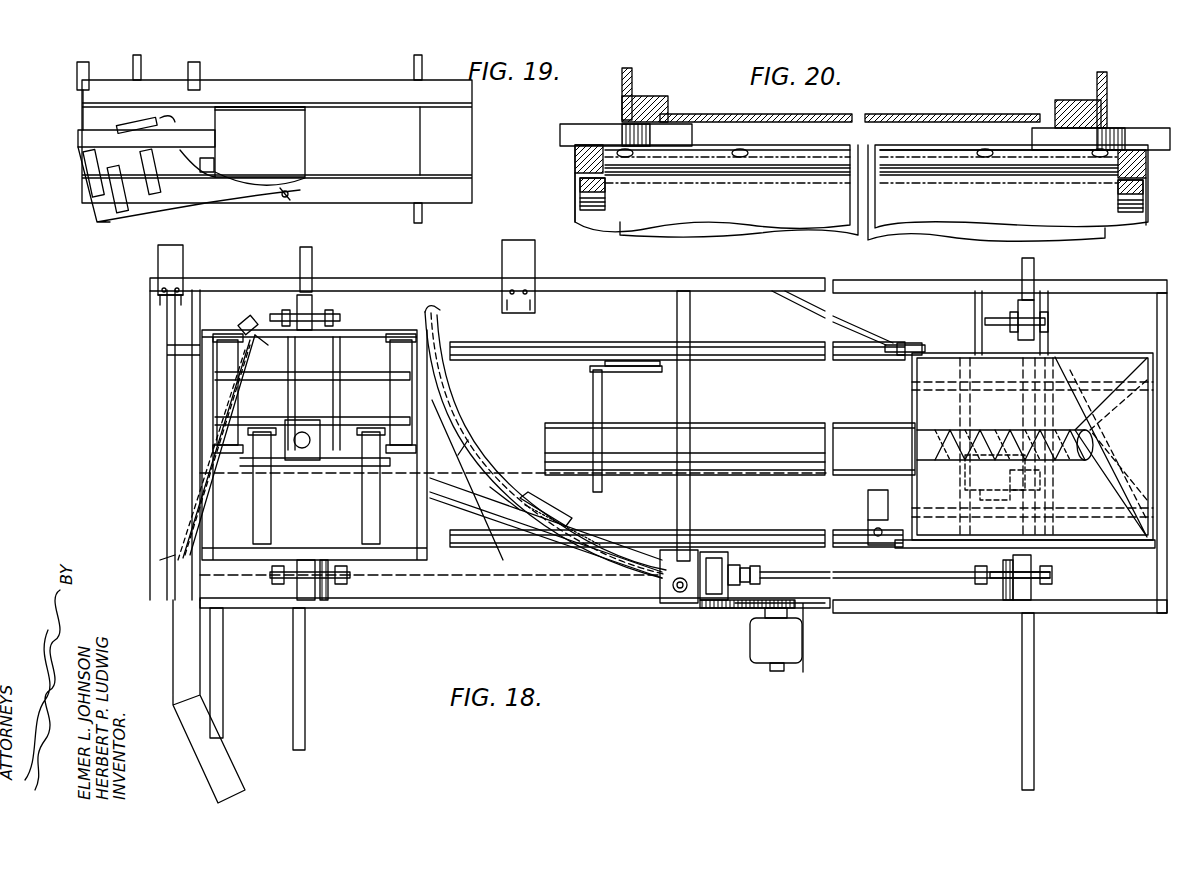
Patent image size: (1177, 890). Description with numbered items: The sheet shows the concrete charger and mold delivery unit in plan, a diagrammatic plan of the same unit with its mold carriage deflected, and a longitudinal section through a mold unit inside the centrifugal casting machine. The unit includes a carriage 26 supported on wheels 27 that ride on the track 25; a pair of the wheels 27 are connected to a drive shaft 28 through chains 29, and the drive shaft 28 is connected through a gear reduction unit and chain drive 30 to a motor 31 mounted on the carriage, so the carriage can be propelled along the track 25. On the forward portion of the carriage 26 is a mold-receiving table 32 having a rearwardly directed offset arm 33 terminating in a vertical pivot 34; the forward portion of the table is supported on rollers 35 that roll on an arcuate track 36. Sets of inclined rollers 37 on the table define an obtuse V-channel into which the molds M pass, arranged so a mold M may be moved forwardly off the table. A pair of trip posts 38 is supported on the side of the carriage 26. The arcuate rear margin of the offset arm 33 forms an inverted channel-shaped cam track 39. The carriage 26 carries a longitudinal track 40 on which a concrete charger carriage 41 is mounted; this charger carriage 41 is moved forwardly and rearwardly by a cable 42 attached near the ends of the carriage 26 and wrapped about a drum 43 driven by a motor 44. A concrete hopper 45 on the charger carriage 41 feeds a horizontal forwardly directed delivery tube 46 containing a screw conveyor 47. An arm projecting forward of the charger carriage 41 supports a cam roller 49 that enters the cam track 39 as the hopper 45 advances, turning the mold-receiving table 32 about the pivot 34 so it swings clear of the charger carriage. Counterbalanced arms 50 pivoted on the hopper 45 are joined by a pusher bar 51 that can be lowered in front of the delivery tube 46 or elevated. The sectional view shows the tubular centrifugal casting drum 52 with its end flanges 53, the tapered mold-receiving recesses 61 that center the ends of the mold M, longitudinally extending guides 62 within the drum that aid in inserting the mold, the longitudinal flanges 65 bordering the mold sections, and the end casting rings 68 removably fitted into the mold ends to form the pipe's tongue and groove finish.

In FIG. 19, the track 25 is at (141, 70).
In FIG. 18, the track 25 is at (293, 695).
In FIG. 19, the carriage 26 is at (366, 190).
In FIG. 18, the carriage 26 is at (790, 360).
In FIG. 18, the wheels 27 is at (310, 298).
In FIG. 18, the drive shaft 28 is at (890, 578).
In FIG. 18, the chains 29 is at (325, 600).
In FIG. 18, the gear reduction unit and chain drive 30 is at (728, 608).
In FIG. 18, the motor 31 is at (763, 648).
In FIG. 19, the mold-receiving table 32 is at (175, 210).
In FIG. 18, the mold-receiving table 32 is at (466, 378).
In FIG. 19, the offset arm 33 is at (232, 198).
In FIG. 18, the offset arm 33 is at (498, 560).
In FIG. 19, the vertical pivot 34 is at (283, 198).
In FIG. 18, the vertical pivot 34 is at (678, 592).
In FIG. 18, the rollers 35 is at (245, 318).
In FIG. 18, the arcuate track 36 is at (178, 577).
In FIG. 19, the inclined rollers 37 is at (150, 155).
In FIG. 18, the inclined rollers 37 is at (258, 432).
In FIG. 19, the trip posts 38 is at (77, 73).
In FIG. 18, the trip posts 38 is at (158, 260).
In FIG. 18, the cam track 39 is at (552, 512).
In FIG. 19, the track 40 is at (418, 175).
In FIG. 18, the track 40 is at (725, 342).
In FIG. 19, the concrete charger carriage 41 is at (264, 105).
In FIG. 18, the concrete charger carriage 41 is at (950, 548).
In FIG. 18, the cable 42 is at (545, 458).
In FIG. 18, the drum 43 is at (968, 485).
In FIG. 18, the motor 44 is at (1108, 462).
In FIG. 19, the concrete hopper 45 is at (305, 145).
In FIG. 18, the concrete hopper 45 is at (1093, 358).
In FIG. 19, the delivery tube 46 is at (80, 138).
In FIG. 18, the delivery tube 46 is at (752, 445).
In FIG. 18, the screw conveyor 47 is at (950, 445).
In FIG. 19, the cam roller 49 is at (216, 165).
In FIG. 18, the cam roller 49 is at (872, 528).
In FIG. 18, the counterbalanced arms 50 is at (650, 372).
In FIG. 18, the pusher bar 51 is at (593, 395).
In FIG. 20, the centrifugal casting drum 52 is at (957, 114).
In FIG. 20, the end flanges 53 is at (645, 104).
In FIG. 20, the mold-receiving recesses 61 is at (575, 165).
In FIG. 20, the guides 62 is at (610, 130).
In FIG. 20, the longitudinal flanges 65 is at (905, 155).
In FIG. 20, the end casting rings 68 is at (605, 192).
In FIG. 20, the mold M is at (788, 222).